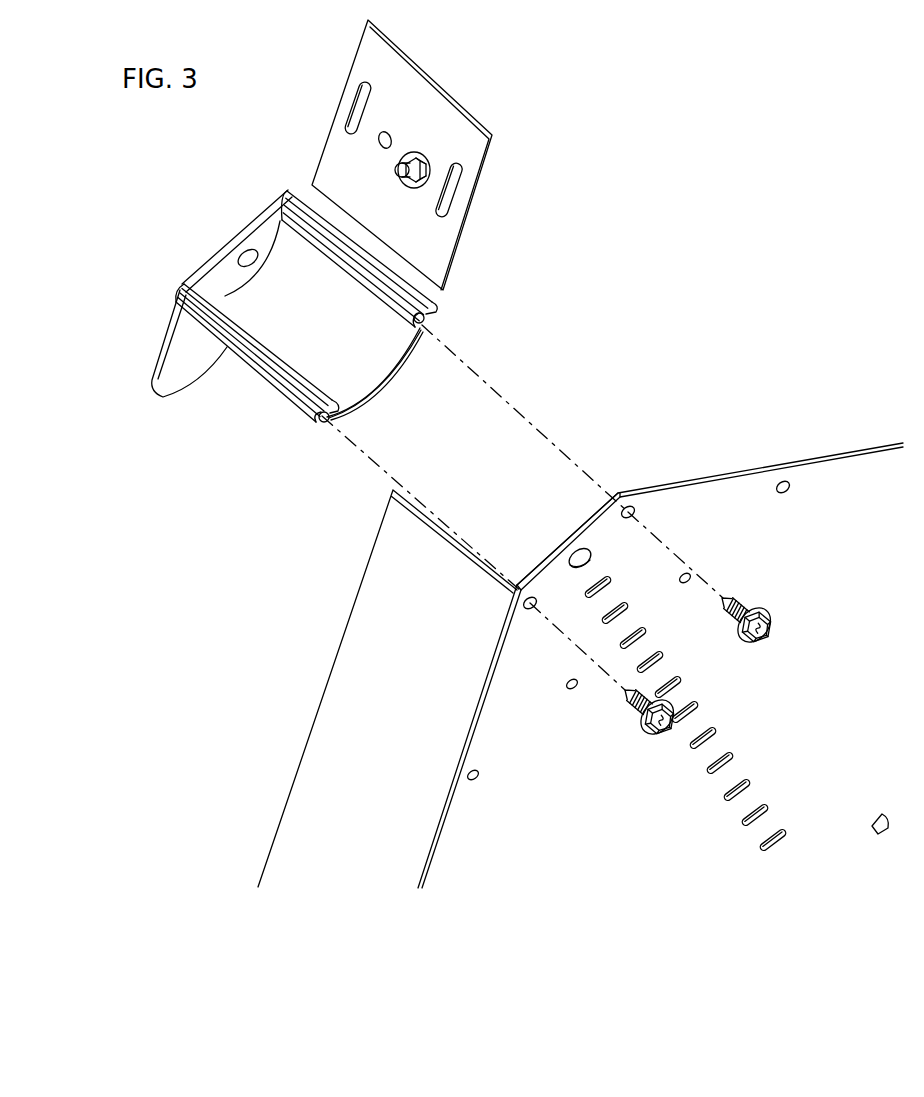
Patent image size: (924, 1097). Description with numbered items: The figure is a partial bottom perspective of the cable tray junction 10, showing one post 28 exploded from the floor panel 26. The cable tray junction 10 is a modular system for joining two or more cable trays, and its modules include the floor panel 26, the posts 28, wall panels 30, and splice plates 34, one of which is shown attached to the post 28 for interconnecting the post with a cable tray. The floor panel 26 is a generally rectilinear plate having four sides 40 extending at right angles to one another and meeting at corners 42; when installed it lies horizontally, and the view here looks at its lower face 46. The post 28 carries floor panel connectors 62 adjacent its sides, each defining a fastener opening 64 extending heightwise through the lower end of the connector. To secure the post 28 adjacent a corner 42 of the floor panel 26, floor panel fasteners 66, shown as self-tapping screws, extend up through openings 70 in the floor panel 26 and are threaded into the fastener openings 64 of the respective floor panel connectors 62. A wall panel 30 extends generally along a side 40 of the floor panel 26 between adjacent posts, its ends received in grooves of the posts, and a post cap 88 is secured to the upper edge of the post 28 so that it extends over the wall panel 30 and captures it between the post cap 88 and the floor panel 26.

The cable tray junction 10 is at (647, 180).
The floor panel 26 is at (745, 465).
The post 28 is at (265, 400).
The wall panel 30 is at (352, 596).
The splice plate 34 is at (457, 87).
The side 40 is at (693, 477).
The corner 42 is at (572, 535).
The lower face 46 is at (806, 497).
The floor panel connector 62 is at (437, 322).
The fastener opening 64 is at (423, 328).
The floor panel fastener 66 is at (742, 603).
The opening 70 is at (633, 508).
The post cap 88 is at (153, 361).